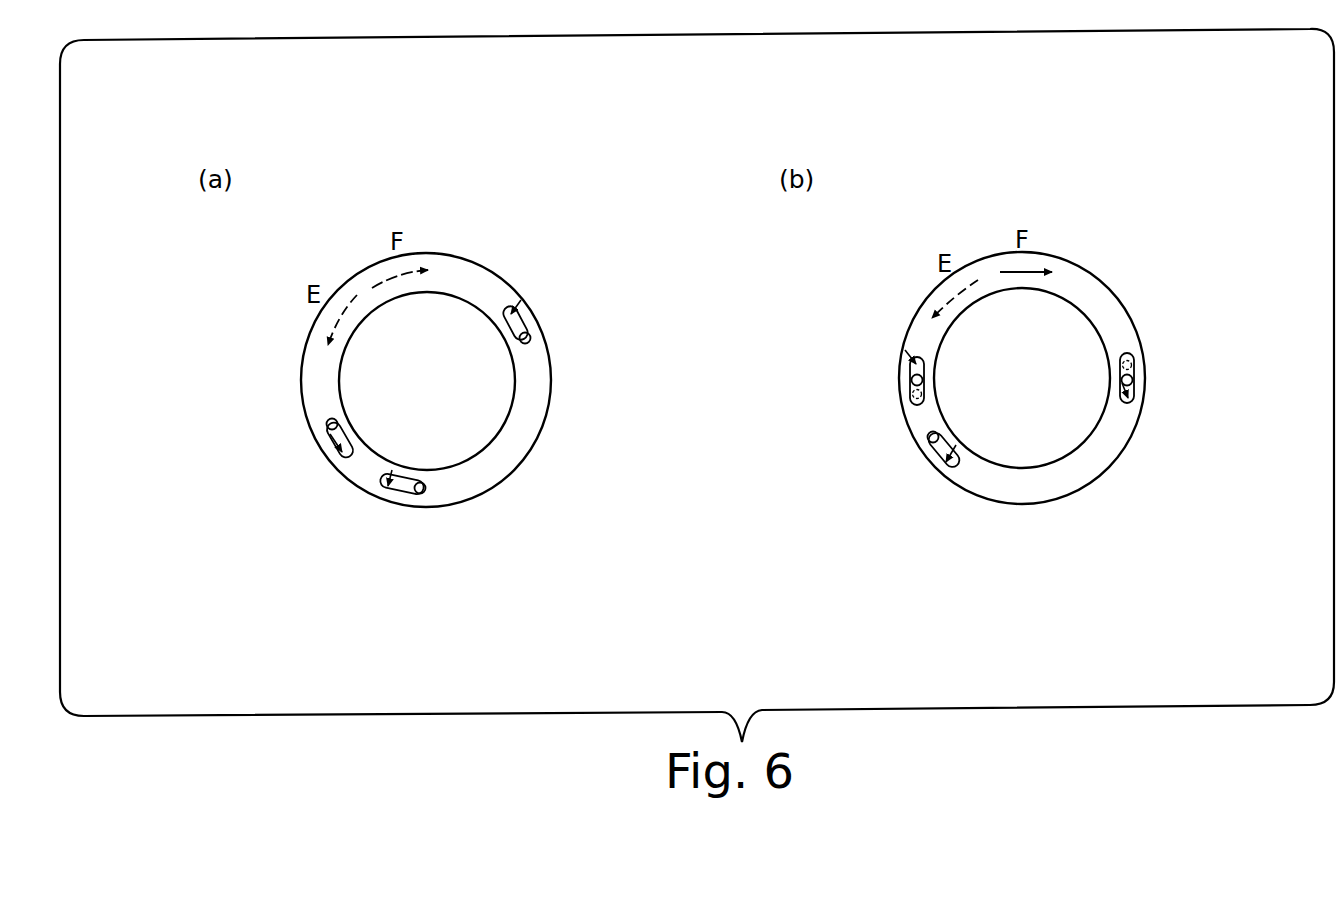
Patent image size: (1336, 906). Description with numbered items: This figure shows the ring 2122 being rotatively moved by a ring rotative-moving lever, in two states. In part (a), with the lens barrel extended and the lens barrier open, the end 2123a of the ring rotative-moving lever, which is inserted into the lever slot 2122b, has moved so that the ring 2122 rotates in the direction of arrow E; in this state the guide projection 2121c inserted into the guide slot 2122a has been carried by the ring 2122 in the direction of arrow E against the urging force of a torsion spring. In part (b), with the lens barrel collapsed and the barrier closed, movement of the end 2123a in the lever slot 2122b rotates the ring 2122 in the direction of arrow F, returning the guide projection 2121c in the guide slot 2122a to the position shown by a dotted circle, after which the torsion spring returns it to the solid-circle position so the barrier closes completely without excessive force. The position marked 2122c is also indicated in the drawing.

The ring 2122 is at (521, 437).
The guide slot 2122a is at (515, 307).
The guide projection 2121c is at (531, 338).
The lever slot 2122b is at (388, 493).
The end of the ring rotative-moving lever 2123a is at (425, 493).
The hole 2122c is at (912, 380).